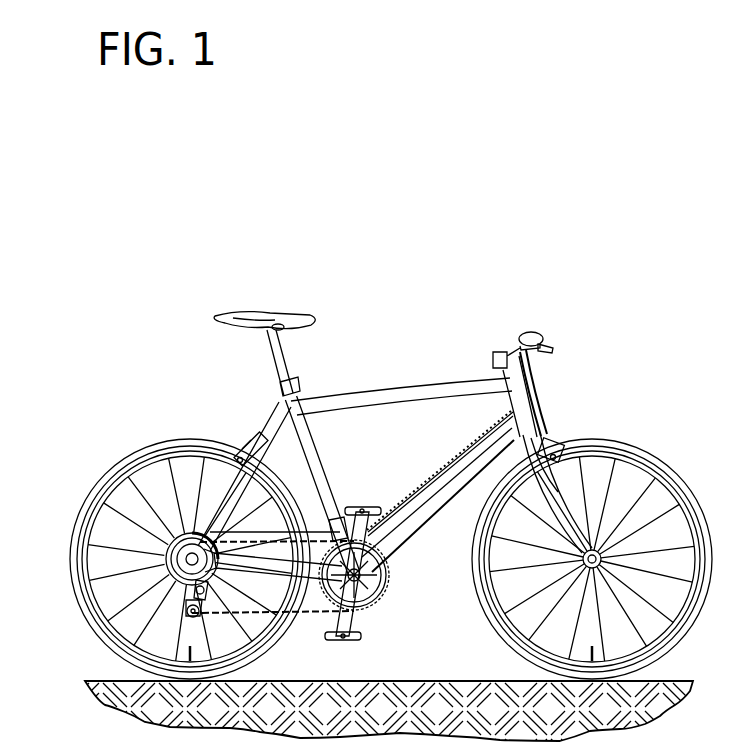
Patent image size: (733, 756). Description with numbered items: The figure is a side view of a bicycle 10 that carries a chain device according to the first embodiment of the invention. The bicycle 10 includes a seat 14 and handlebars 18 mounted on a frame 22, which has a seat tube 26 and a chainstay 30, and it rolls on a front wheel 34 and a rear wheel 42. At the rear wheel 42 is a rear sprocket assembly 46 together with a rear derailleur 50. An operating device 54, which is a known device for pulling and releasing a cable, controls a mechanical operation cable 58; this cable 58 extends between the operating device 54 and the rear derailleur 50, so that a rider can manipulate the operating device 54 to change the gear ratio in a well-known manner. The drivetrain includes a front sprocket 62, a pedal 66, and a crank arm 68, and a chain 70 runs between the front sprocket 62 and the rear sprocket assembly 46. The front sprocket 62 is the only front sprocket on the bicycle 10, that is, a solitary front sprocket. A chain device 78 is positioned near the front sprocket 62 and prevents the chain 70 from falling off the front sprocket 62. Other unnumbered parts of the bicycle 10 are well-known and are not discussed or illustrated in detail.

The bicycle 10 is at (540, 288).
The seat 14 is at (237, 316).
The handlebars 18 is at (546, 334).
The frame 22 is at (368, 397).
The seat tube 26 is at (318, 452).
The chainstay 30 is at (235, 573).
The front wheel 34 is at (628, 446).
The rear wheel 42 is at (155, 447).
The rear sprocket assembly 46 is at (113, 508).
The rear derailleur 50 is at (183, 607).
The operating device 54 is at (550, 352).
The mechanical operation cable 58 is at (487, 422).
The front sprocket 62 is at (377, 603).
The pedal 66 is at (352, 644).
The crank arm 68 is at (360, 620).
The chain 70 is at (330, 612).
The chain device 78 is at (366, 486).